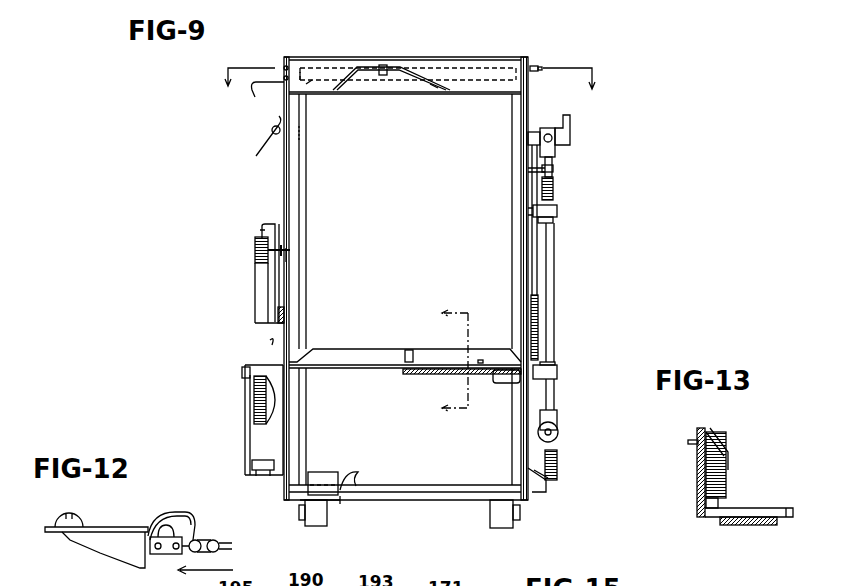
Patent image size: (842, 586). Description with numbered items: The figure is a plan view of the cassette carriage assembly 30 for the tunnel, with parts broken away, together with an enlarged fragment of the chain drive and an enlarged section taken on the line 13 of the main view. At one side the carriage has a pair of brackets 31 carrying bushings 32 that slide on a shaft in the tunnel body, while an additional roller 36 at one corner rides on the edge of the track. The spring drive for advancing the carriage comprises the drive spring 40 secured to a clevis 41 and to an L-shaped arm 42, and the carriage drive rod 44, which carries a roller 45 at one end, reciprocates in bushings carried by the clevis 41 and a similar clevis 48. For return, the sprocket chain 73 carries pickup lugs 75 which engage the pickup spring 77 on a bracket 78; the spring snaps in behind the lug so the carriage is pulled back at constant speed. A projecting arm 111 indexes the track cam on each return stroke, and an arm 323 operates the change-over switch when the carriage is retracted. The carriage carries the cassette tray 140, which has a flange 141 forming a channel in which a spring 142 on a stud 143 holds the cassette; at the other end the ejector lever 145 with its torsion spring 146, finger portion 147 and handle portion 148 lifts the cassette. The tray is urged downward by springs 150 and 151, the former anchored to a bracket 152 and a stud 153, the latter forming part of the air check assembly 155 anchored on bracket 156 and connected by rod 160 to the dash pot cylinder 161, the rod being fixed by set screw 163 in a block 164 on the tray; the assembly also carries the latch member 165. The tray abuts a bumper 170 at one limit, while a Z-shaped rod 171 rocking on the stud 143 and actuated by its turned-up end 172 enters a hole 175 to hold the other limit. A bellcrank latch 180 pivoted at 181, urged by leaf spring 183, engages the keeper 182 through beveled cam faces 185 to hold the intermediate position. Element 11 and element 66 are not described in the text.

In FIG. 9, the cassette carriage assembly 30 is at (182, 192).
In FIG. 9, the section line 11 is at (416, 65).
In FIG. 9, the section line 13— 13 is at (462, 360).
In FIG. 9, the beveled cam faces 185 is at (286, 60).
In FIG. 9, the complementary hole 175 is at (303, 72).
In FIG. 9, the Z-shaped rod 171 is at (450, 70).
In FIG. 9, the additional roller 36 is at (512, 60).
In FIG. 9, the actuating arm end 172 is at (541, 62).
In FIG. 9, the arm 323 is at (247, 100).
In FIG. 9, the keeper 182 is at (310, 84).
In FIG. 9, the stud 143 is at (382, 78).
In FIG. 9, the spring 142 is at (434, 86).
In FIG. 9, the flange 141 is at (466, 92).
In FIG. 9, the pivot 181 is at (302, 132).
In FIG. 9, the bellcrank shaped latch 180 is at (250, 146).
In FIG. 9, the leaf spring 183 is at (284, 152).
In FIG. 9, the rod 160 is at (270, 222).
In FIG. 9, the cassette tray 140 is at (310, 204).
In FIG. 13, the cassette tray 140 is at (722, 447).
In FIG. 9, the block 164 is at (296, 240).
In FIG. 9, the set screw 163 is at (292, 255).
In FIG. 9, the spring 151 is at (254, 285).
In FIG. 9, the dash pot cylinder 161 is at (278, 318).
In FIG. 9, the latch member 165 is at (270, 345).
In FIG. 9, the projecting arm 111 is at (243, 370).
In FIG. 9, the air check assembly 155 is at (234, 396).
In FIG. 9, the bracket 156 is at (252, 468).
In FIG. 9, the latch bracket 66 is at (570, 115).
In FIG. 9, the L-shaped arm 42 is at (560, 142).
In FIG. 9, the stud 153 is at (556, 168).
In FIG. 9, the spring 150 is at (558, 190).
In FIG. 9, the clevis 48 is at (560, 222).
In FIG. 9, the carriage drive rod 44 is at (556, 264).
In FIG. 9, the drive spring 40 is at (540, 310).
In FIG. 9, the clevis 41 is at (556, 375).
In FIG. 9, the roller 45 is at (560, 430).
In FIG. 9, the bracket 152 is at (550, 492).
In FIG. 9, the handle portion 148 is at (500, 384).
In FIG. 9, the lever 145 is at (425, 378).
In FIG. 13, the lever 145 is at (700, 506).
In FIG. 9, the bracket 78 is at (326, 472).
In FIG. 12, the bracket 78 is at (108, 553).
In FIG. 9, the pickup spring 77 is at (348, 474).
In FIG. 12, the pickup spring 77 is at (172, 512).
In FIG. 9, the bumper 170 is at (336, 500).
In FIG. 9, the bushings 32 is at (304, 516).
In FIG. 9, the brackets 31 is at (316, 527).
In FIG. 12, the pickup lugs 75 is at (158, 528).
In FIG. 12, the sprocket chain 73 is at (205, 538).
In FIG. 13, the finger portion 147 is at (713, 518).
In FIG. 13, the torsion spring 146 is at (700, 442).